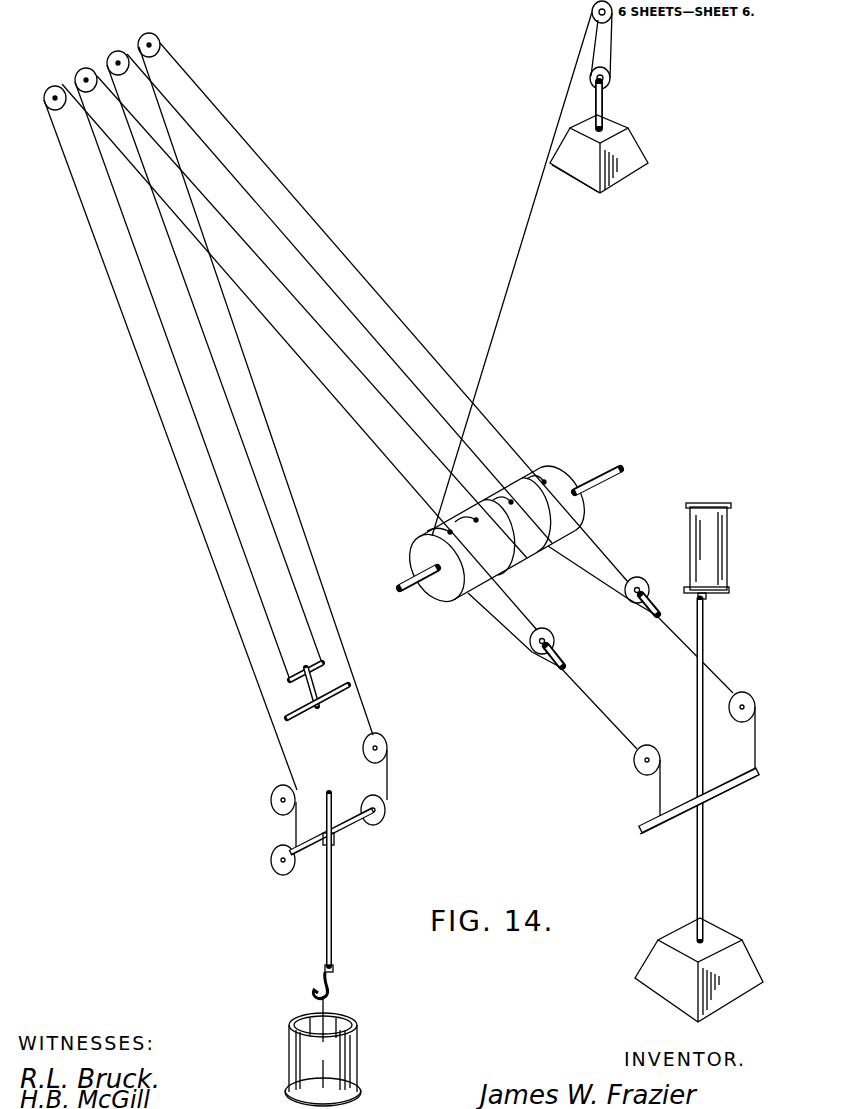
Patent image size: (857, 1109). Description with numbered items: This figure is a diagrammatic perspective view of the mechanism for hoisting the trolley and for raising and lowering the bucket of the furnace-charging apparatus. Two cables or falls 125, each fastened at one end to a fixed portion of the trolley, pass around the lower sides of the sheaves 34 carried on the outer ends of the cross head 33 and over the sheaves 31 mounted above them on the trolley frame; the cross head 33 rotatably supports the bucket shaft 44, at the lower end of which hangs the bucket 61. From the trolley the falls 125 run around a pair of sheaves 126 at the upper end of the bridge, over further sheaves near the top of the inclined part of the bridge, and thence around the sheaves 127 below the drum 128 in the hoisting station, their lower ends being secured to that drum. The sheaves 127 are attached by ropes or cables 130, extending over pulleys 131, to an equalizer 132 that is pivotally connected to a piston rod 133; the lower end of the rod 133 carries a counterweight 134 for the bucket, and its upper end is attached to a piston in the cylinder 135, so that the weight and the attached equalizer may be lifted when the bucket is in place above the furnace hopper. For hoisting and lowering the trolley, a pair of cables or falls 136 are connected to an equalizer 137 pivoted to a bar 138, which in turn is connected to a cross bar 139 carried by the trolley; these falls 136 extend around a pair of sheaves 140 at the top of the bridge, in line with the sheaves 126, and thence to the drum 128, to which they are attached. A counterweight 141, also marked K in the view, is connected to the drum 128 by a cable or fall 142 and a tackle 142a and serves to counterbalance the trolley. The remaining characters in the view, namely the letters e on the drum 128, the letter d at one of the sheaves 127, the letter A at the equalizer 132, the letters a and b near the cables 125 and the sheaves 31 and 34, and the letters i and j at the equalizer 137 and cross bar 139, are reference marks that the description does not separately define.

The sheaves 126 is at (56, 86).
The sheaves 140 is at (88, 68).
The cables or falls 125 is at (397, 306).
The cables or falls 136 is at (412, 384).
The cable or fall 142 is at (502, 331).
The tackle 142a is at (608, 76).
The counterweight K is at (628, 150).
The counterweight 141 is at (623, 170).
The drum 128 is at (523, 553).
The direction of winding e is at (428, 532).
The sheaves 127 is at (640, 580).
The pulley hook d is at (632, 610).
The ropes or cables 130 is at (683, 640).
The pulleys 131 is at (622, 771).
The cylinder 135 is at (727, 560).
The piston rod 133 is at (696, 873).
The equalizer 132 is at (718, 803).
The cross bar end A is at (743, 786).
The counterweight 134 is at (663, 990).
The sheaves 31 is at (296, 800).
The sheaves 34 is at (279, 875).
The cross head 33 is at (357, 828).
The bucket shaft 44 is at (332, 886).
The equalizer 137 is at (300, 668).
The bar 138 is at (328, 686).
The cross bar 139 is at (334, 700).
The bucket 61 is at (358, 1066).
The cable ends a is at (279, 847).
The pulley b is at (277, 795).
The cross piece end i is at (287, 680).
The cross piece end j is at (348, 688).